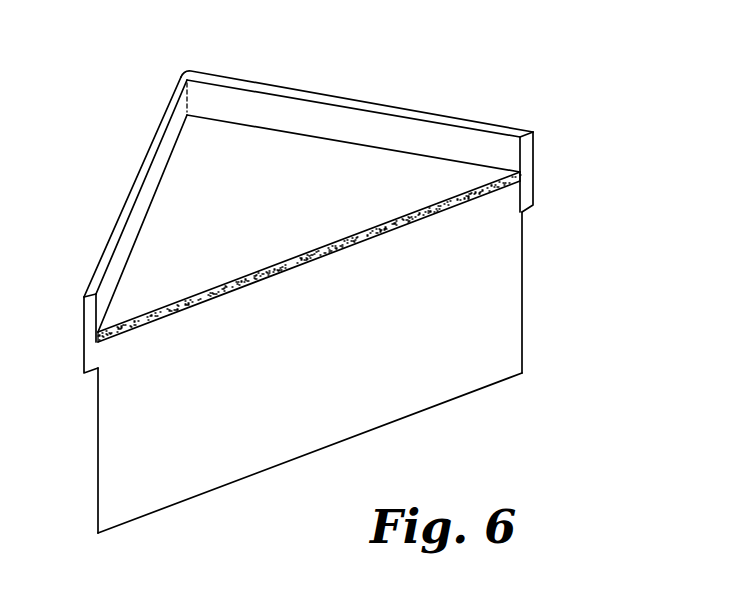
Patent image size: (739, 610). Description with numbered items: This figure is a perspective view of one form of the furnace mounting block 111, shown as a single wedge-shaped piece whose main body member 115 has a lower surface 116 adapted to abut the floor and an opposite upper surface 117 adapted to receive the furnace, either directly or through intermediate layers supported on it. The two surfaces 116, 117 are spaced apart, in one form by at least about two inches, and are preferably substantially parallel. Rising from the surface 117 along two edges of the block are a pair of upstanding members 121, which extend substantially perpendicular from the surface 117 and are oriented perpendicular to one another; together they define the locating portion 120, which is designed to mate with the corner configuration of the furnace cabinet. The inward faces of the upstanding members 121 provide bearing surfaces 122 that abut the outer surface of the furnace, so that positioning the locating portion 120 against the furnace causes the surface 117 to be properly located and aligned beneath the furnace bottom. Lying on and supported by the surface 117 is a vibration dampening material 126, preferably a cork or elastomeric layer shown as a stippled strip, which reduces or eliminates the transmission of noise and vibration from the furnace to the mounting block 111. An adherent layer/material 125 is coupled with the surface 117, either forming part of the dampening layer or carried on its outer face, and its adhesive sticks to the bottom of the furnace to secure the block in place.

The furnace mounting block 111 is at (490, 265).
The main body member 115 is at (143, 428).
The surface adapted for abutting the floor 116 is at (415, 409).
The surface adapted for receiving the furnace 117 is at (478, 192).
The locating portion 120 is at (355, 125).
The upstanding member 121 is at (103, 248).
The bearing surface 122 is at (172, 138).
The adherent layer/material 125 is at (158, 228).
The vibration dampening material 126 is at (255, 262).